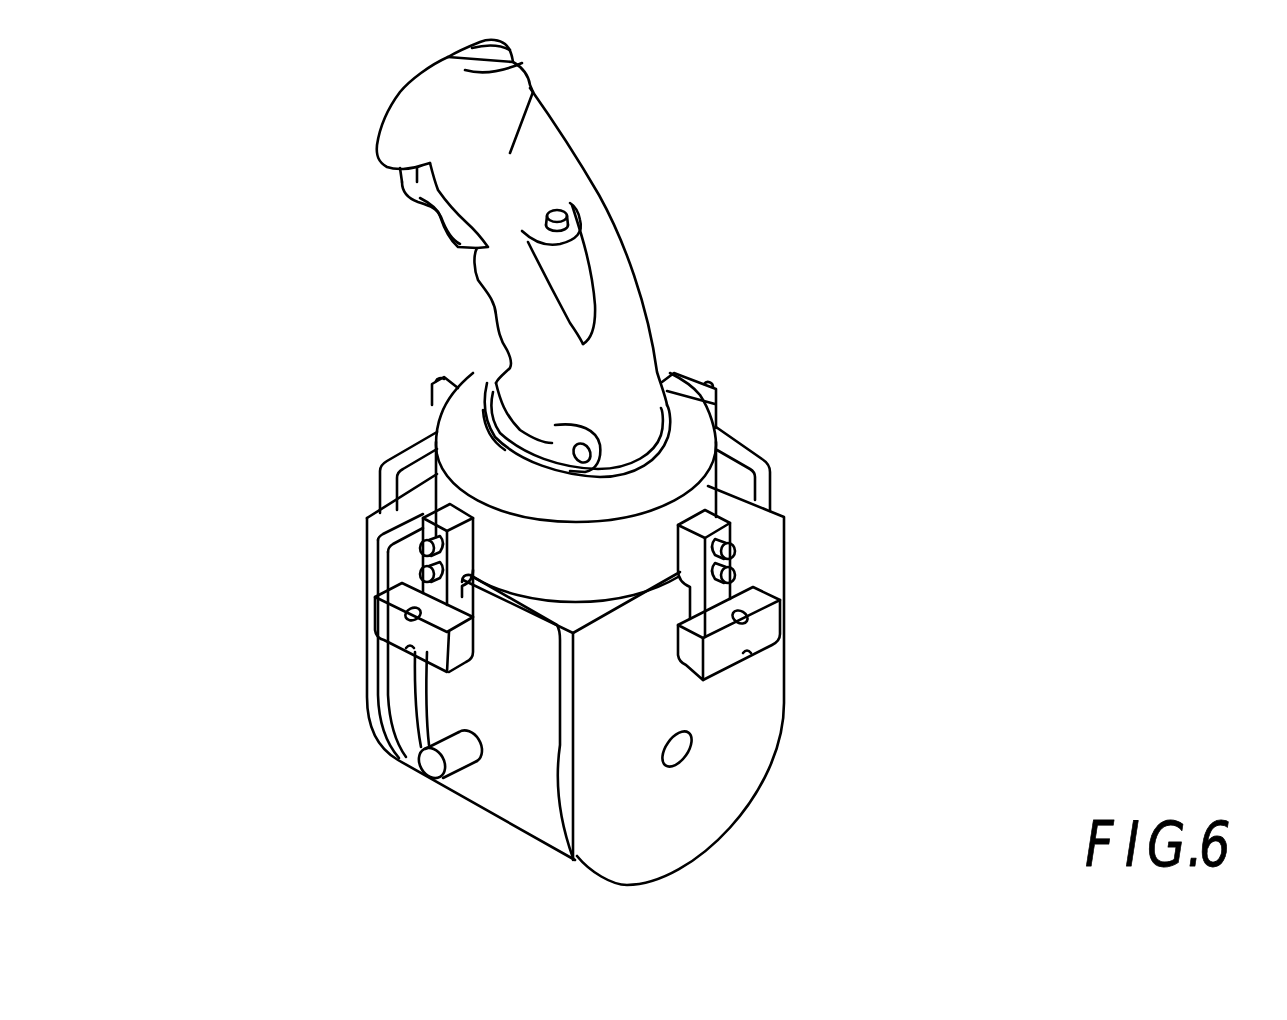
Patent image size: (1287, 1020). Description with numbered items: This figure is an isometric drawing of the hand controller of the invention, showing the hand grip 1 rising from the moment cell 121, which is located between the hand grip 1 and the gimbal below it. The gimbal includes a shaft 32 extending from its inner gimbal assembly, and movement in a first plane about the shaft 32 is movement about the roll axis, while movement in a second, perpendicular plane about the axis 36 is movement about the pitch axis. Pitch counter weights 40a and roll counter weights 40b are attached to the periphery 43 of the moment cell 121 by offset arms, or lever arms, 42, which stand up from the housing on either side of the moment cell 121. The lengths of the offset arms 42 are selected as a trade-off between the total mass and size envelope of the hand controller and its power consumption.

The hand grip 1 is at (590, 163).
The moment cell 121 is at (692, 428).
The periphery 43 is at (712, 489).
The pitch counter weights 40a is at (766, 458).
The roll counter weights 40b is at (379, 492).
The offset arms 42 is at (427, 520).
The shaft 32 is at (418, 781).
The axis 36 is at (668, 767).